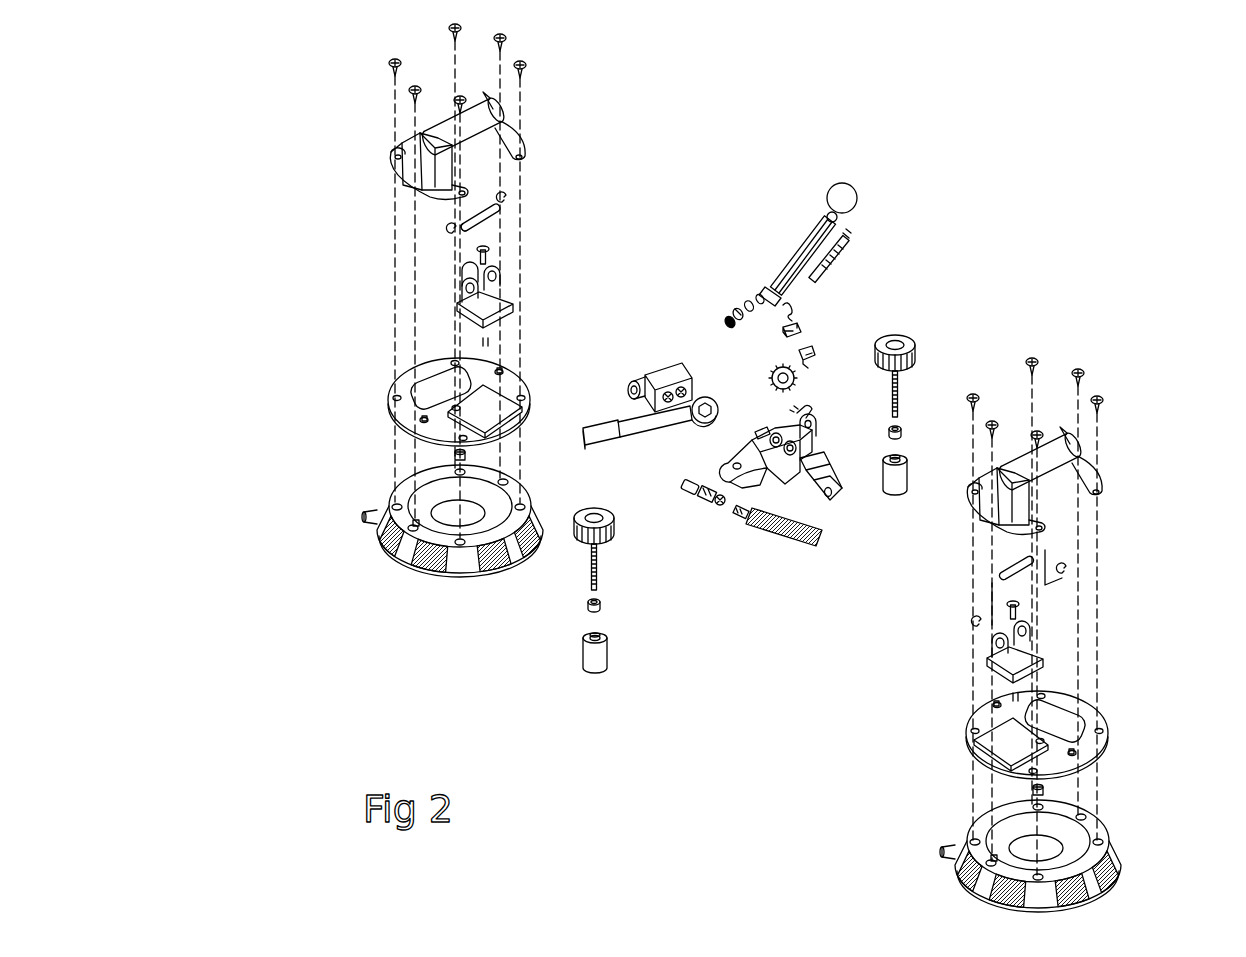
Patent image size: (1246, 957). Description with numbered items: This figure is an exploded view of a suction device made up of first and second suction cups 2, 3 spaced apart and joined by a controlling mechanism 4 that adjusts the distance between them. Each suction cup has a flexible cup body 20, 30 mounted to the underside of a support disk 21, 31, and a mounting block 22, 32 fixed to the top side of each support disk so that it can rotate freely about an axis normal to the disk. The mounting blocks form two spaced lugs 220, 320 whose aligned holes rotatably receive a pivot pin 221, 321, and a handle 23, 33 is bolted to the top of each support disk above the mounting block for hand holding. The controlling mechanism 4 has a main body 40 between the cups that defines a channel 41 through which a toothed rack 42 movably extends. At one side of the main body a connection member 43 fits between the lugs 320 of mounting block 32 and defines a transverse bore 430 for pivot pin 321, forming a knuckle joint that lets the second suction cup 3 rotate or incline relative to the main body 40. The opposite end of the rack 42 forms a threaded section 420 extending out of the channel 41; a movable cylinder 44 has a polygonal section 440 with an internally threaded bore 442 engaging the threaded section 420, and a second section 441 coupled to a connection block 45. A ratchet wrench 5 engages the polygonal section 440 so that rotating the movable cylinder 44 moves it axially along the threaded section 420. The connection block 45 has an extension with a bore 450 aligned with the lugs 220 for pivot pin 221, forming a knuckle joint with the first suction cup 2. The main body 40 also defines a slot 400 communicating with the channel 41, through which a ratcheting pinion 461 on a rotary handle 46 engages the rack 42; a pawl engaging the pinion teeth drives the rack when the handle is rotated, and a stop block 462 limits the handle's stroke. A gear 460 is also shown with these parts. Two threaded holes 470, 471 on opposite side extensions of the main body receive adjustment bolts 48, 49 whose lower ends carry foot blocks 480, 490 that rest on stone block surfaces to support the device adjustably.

The first suction cup 2 is at (262, 218).
The flexible cup body 20 is at (392, 500).
The support disk 21 is at (398, 408).
The mounting block 22 is at (508, 311).
The lugs 220 is at (500, 293).
The pivot pin 221 is at (503, 212).
The handle 23 is at (445, 135).
The second suction cup 3 is at (1165, 482).
The flexible cup body 30 is at (1118, 850).
The support disk 31 is at (1102, 748).
The mounting block 32 is at (990, 648).
The lugs 320 is at (985, 668).
The pivot pin 321 is at (1005, 570).
The handle 33 is at (1022, 462).
The controlling mechanism 4 is at (970, 250).
The main body 40 is at (752, 450).
The slot 400 is at (772, 425).
The channel 41 is at (828, 472).
The rack 42 is at (790, 545).
The threaded section 420 is at (742, 518).
The connection member 43 is at (835, 497).
The transverse bore 430 is at (812, 490).
The movable cylinder 44 is at (690, 492).
The polygonal section 440 is at (708, 497).
The second section 441 is at (702, 480).
The internally threaded bore 442 is at (718, 500).
The connection block 45 is at (675, 375).
The bore 450 is at (628, 389).
The rotary handle 46 is at (795, 250).
The gear 460 is at (780, 372).
The ratcheting pinion 461 is at (780, 328).
The stop block 462 is at (812, 351).
The threaded hole 470 is at (758, 478).
The threaded hole 471 is at (808, 416).
The adjustment bolt 48 is at (616, 528).
The foot block 480 is at (615, 664).
The adjustment bolt 49 is at (905, 333).
The foot block 490 is at (893, 488).
The ratchet wrench 5 is at (650, 437).